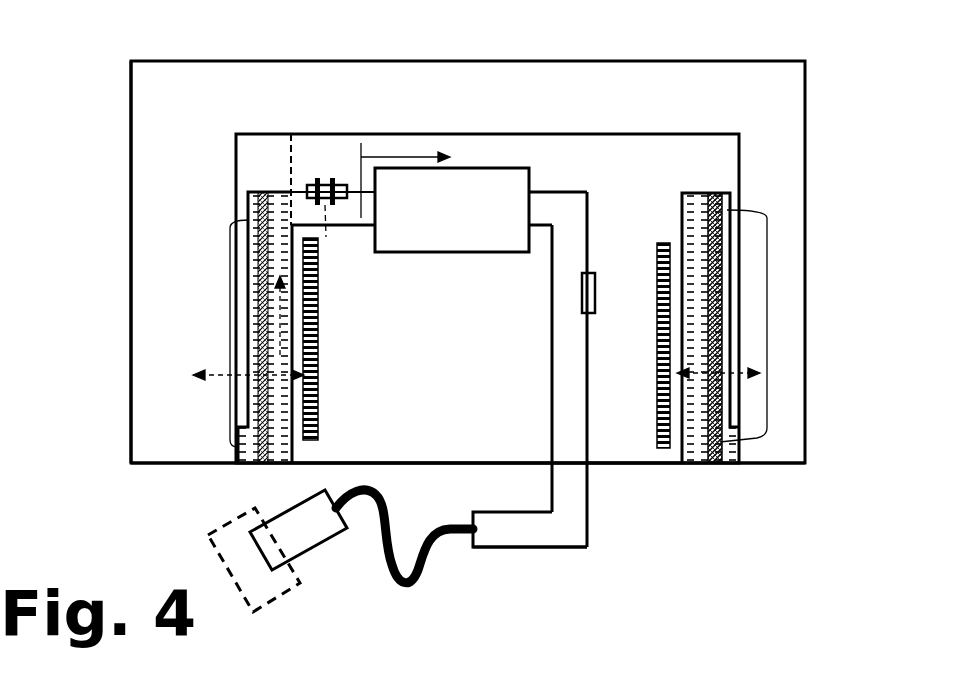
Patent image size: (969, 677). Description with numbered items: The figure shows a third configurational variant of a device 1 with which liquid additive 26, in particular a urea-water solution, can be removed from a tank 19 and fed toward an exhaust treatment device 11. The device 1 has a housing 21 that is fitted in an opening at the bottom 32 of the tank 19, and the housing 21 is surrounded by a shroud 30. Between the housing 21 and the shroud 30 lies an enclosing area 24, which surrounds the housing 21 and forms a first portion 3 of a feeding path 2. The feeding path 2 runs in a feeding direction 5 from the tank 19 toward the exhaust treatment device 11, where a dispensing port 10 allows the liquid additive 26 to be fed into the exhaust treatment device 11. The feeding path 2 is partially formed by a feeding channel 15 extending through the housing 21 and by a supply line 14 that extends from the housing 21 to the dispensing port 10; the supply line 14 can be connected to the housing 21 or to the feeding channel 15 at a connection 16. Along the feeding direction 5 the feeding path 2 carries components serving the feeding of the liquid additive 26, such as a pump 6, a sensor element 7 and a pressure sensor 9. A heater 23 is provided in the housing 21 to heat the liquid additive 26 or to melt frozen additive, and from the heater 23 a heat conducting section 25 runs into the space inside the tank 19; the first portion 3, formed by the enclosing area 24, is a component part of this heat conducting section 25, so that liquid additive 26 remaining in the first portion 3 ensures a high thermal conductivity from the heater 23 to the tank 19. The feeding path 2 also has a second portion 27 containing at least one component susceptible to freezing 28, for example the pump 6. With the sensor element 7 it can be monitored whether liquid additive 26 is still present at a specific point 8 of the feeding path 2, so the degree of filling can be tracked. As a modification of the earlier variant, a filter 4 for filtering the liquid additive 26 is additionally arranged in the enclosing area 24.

The device 1 is at (236, 116).
The feeding path 2 is at (427, 560).
The first portion 3 is at (282, 313).
The filter 4 is at (693, 220).
The feeding direction 5 is at (229, 303).
The pump 6 is at (520, 167).
The sensor element 7 is at (323, 180).
The specific point 8 is at (326, 237).
The pressure sensor 9 is at (593, 275).
The dispensing port 10 is at (313, 555).
The exhaust treatment device 11 is at (267, 603).
The supply line 14 is at (473, 550).
The feeding channel 15 is at (590, 383).
The connection 16 is at (515, 549).
The tank 19 is at (131, 375).
The housing 21 is at (291, 176).
The heater 23 is at (320, 395).
The enclosing area 24 is at (248, 206).
The heat conducting section 25 is at (217, 378).
The liquid additive 26 is at (727, 197).
The second portion 27 is at (400, 155).
The component susceptible to freezing 28 is at (480, 253).
The shroud 30 is at (236, 176).
The bottom 32 is at (773, 464).